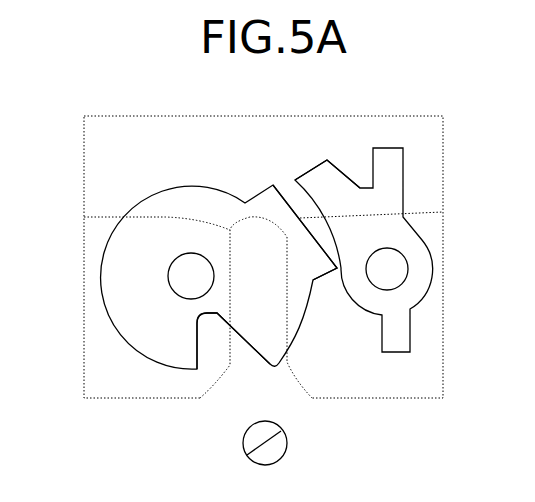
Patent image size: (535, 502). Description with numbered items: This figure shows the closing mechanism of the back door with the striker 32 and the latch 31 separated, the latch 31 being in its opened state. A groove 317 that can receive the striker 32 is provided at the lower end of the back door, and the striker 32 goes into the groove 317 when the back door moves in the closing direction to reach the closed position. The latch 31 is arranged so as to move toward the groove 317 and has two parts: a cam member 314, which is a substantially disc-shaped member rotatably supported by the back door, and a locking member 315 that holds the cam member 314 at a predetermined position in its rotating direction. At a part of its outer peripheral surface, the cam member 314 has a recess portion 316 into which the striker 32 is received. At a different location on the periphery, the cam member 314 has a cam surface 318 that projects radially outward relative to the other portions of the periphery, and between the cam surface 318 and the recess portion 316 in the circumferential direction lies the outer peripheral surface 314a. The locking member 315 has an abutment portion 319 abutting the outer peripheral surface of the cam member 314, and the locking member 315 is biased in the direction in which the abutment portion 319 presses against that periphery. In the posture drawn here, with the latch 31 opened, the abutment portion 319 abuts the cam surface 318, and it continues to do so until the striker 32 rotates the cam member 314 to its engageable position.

The latch 31 is at (353, 366).
The striker 32 is at (242, 448).
The cam member 314 is at (135, 337).
The outer peripheral surface 314a is at (309, 322).
The locking member 315 is at (425, 260).
The recess portion 316 is at (207, 320).
The groove 317 is at (84, 218).
The cam surface 318 is at (440, 212).
The abutment portion 319 is at (291, 185).